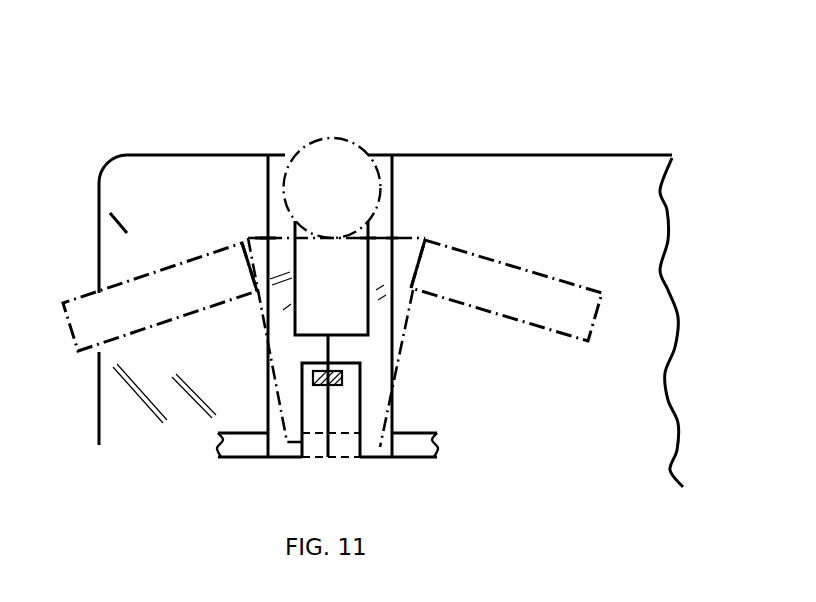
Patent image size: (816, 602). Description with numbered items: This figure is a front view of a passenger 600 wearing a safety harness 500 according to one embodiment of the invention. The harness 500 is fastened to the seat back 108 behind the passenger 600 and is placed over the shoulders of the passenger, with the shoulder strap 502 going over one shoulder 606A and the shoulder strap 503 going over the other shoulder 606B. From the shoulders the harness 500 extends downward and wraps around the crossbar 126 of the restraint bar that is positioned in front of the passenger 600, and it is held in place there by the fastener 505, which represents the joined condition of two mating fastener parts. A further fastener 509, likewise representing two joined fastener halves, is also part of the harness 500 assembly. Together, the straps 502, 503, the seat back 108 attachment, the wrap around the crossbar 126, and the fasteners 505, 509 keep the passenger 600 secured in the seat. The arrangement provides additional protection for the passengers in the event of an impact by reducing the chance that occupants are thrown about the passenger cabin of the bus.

The safety harness 500 is at (400, 129).
The passenger 600 is at (325, 128).
The shoulder 606A is at (253, 240).
The shoulder 606B is at (412, 234).
The shoulder strap 502 is at (283, 272).
The shoulder strap 503 is at (375, 288).
The fastener 505 is at (345, 380).
The fastener 509 is at (330, 412).
The crossbar 126 is at (420, 443).
The seat back 108 is at (617, 222).